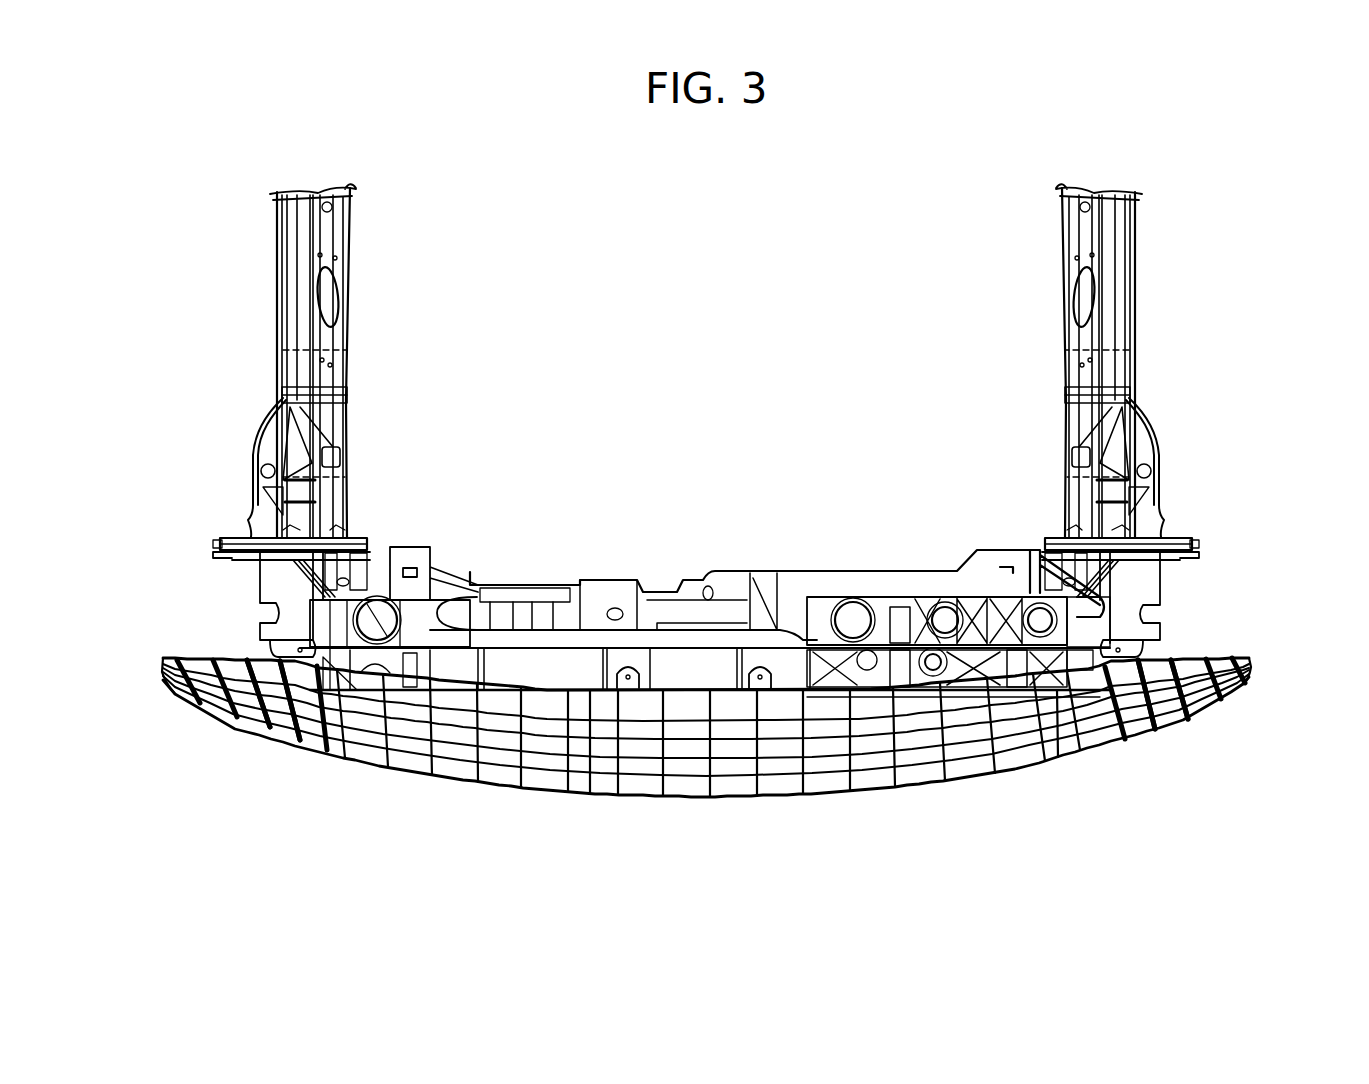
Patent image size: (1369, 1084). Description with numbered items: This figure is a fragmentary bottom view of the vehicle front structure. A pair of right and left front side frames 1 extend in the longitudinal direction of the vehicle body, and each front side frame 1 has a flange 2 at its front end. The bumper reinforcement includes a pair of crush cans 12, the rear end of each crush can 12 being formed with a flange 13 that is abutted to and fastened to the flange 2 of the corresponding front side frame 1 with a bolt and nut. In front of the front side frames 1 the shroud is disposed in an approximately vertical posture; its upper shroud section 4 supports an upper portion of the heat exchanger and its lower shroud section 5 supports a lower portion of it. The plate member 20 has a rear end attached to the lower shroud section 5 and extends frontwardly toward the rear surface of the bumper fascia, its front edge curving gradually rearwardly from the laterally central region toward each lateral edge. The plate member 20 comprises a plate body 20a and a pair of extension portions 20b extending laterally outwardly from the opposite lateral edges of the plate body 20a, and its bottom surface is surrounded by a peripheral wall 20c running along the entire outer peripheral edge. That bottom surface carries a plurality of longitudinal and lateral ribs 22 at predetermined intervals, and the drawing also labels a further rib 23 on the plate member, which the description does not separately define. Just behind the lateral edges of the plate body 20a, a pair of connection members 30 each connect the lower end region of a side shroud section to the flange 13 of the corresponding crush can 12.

The front side frame 1 is at (282, 250).
The flange 2 is at (240, 538).
The upper shroud section 4 is at (788, 583).
The lower shroud section 5 is at (635, 640).
The crush can 12 is at (258, 607).
The flange 13 is at (237, 556).
The plate member 20 is at (751, 787).
The plate body 20a is at (777, 796).
The extension portion 20b is at (232, 735).
The peripheral wall 20c is at (1245, 663).
The ribs 22 is at (287, 723).
The vertical rib 23 is at (592, 794).
The connection member 30 is at (265, 572).